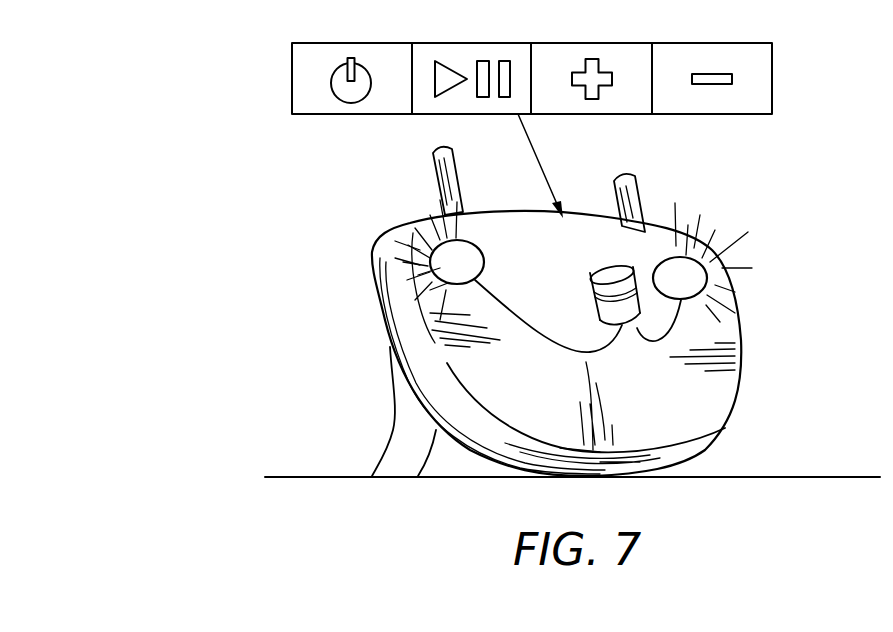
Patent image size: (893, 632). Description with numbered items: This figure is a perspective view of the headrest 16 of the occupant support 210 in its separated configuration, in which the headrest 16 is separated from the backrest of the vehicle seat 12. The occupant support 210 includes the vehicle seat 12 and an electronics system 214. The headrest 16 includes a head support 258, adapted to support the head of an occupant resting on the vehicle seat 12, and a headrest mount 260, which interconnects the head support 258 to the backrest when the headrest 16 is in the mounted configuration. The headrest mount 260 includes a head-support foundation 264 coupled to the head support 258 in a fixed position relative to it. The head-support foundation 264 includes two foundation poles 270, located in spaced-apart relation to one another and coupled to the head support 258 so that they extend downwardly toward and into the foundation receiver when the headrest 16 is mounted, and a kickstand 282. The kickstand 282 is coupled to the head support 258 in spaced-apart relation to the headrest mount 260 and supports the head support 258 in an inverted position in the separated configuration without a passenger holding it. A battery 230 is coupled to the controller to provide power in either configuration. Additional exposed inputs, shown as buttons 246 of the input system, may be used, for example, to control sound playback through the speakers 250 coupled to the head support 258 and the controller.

The occupant support 210 is at (226, 116).
The electronics system 214 is at (366, 247).
The vehicle seat 12 is at (45, 283).
The headrest 16 is at (190, 322).
The head support 258 is at (383, 340).
The headrest mount 260 is at (292, 238).
The head-support foundation 264 is at (334, 153).
The foundation poles 270 is at (433, 180).
The speaker 250 is at (453, 255).
The battery 230 is at (615, 263).
The button(s) 246 is at (580, 43).
The kickstand 282 is at (303, 158).